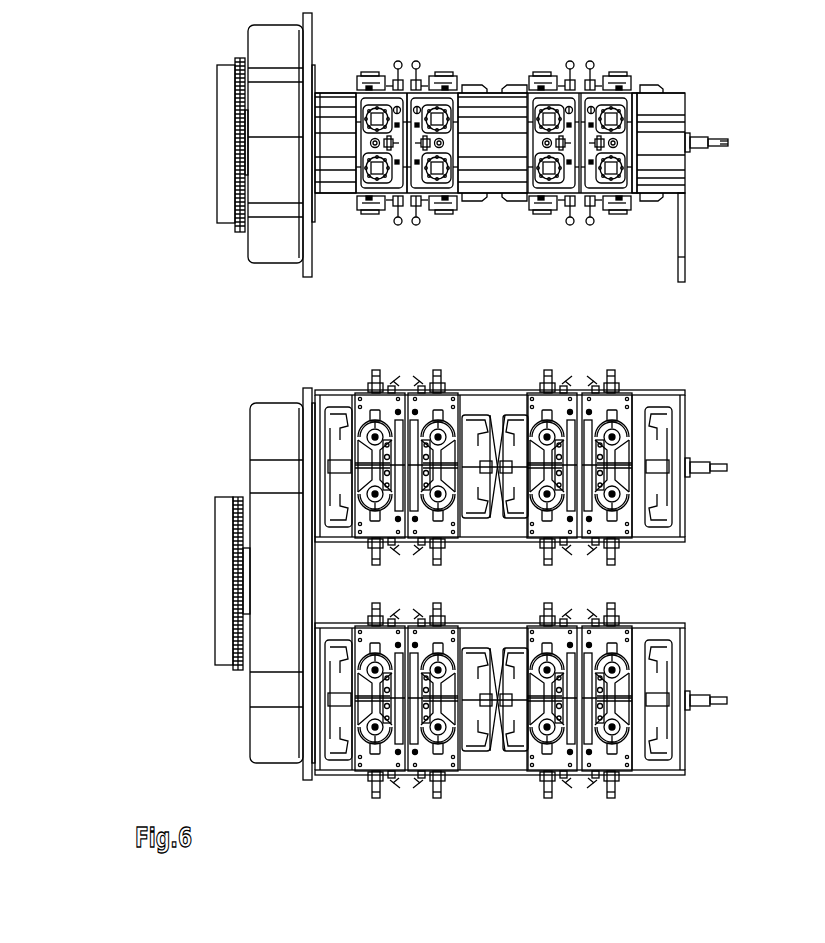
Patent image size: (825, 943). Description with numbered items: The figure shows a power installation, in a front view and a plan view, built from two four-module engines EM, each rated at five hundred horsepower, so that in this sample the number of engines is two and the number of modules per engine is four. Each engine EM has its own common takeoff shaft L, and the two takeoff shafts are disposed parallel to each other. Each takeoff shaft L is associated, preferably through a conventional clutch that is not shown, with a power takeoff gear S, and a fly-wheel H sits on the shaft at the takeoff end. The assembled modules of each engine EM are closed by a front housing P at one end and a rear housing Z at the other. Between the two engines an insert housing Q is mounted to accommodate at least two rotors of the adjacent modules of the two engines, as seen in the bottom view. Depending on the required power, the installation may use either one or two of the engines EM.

The fly-wheel H is at (193, 136).
The power takeoff gear S is at (258, 145).
The rear housing Z is at (347, 102).
The engine EM is at (543, 53).
The insert housing Q is at (490, 185).
The front housing P is at (684, 142).
The common takeoff shaft L is at (734, 106).